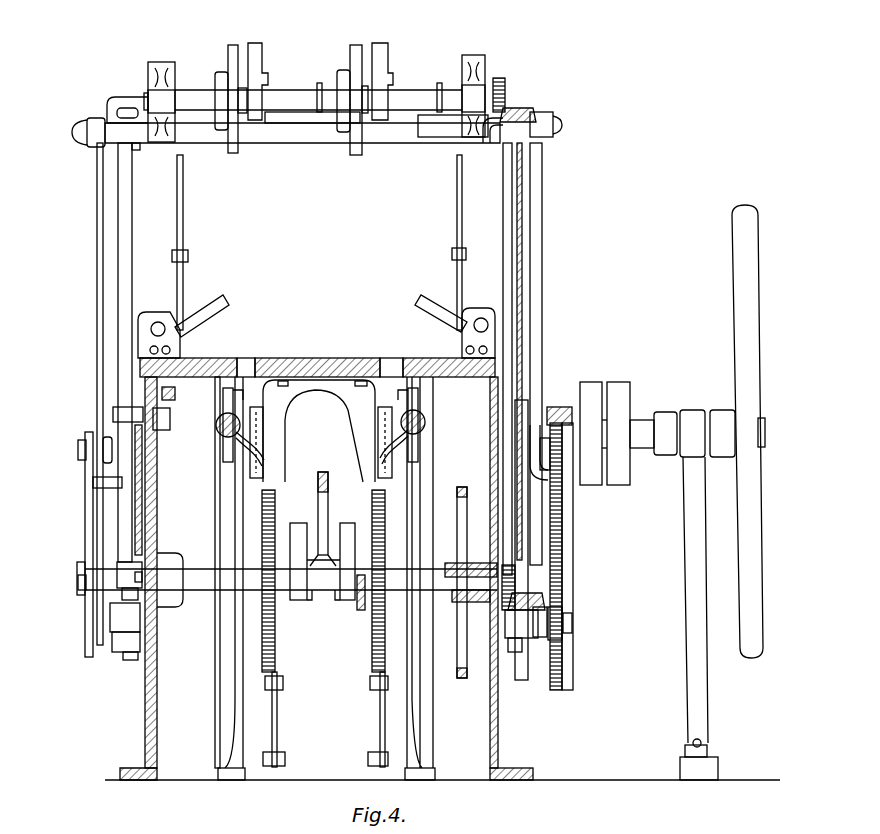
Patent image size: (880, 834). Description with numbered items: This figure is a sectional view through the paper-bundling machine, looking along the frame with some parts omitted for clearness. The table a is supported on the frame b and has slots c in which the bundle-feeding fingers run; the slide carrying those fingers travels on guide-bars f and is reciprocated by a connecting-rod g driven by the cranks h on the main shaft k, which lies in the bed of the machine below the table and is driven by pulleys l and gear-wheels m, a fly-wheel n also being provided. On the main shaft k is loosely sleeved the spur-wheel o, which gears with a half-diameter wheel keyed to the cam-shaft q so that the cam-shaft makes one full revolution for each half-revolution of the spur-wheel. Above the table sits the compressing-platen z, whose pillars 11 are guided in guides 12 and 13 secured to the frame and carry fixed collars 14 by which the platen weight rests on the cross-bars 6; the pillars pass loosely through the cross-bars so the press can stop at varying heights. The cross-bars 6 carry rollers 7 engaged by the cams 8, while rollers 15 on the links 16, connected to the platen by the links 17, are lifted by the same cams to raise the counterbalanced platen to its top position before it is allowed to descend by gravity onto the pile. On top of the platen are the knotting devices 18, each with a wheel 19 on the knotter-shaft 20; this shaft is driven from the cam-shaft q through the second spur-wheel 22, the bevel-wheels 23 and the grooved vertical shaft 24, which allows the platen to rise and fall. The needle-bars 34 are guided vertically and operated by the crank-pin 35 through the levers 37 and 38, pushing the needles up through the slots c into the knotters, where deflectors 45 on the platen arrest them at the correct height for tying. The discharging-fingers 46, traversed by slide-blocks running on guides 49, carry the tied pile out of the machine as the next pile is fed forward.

The cross-bars 6 is at (125, 617).
The rollers 7 is at (94, 650).
The cams 8 is at (85, 509).
The pillars 11 is at (130, 240).
The guides 12 is at (113, 414).
The guides 13 is at (120, 566).
The collars 14 is at (122, 596).
The rollers 15 is at (85, 440).
The links 16 is at (545, 472).
The links 17 is at (97, 286).
The knotting devices 18 is at (364, 45).
The wheel 19 is at (233, 154).
The knotter-shaft 20 is at (188, 103).
The second spur-wheel 22 is at (463, 496).
The bevel-wheels 23 is at (507, 106).
The vertical shaft 24 is at (525, 307).
The needle-bars 34 is at (264, 490).
The crank-pin 35 is at (360, 594).
The levers 37 is at (279, 676).
The levers 38 is at (284, 716).
The deflectors 45 is at (260, 66).
The discharging-fingers 46 is at (222, 316).
The guides 49 is at (170, 415).
The table a is at (329, 358).
The frame b is at (145, 686).
The slots c is at (247, 360).
The guide-bars f is at (218, 433).
The connecting-rod g is at (328, 492).
The cranks h is at (340, 580).
The main shaft k is at (199, 588).
The pulleys l is at (613, 384).
The gear-wheels m is at (574, 668).
The fly-wheel n is at (736, 290).
The spur-wheel o is at (275, 512).
The cam-shaft q is at (220, 602).
The compressing-platen z is at (286, 128).